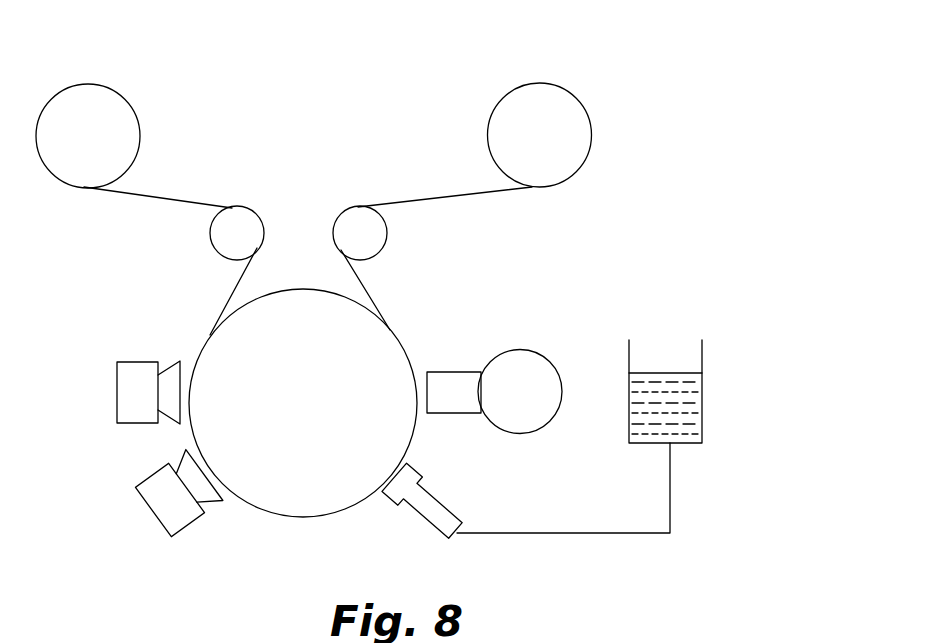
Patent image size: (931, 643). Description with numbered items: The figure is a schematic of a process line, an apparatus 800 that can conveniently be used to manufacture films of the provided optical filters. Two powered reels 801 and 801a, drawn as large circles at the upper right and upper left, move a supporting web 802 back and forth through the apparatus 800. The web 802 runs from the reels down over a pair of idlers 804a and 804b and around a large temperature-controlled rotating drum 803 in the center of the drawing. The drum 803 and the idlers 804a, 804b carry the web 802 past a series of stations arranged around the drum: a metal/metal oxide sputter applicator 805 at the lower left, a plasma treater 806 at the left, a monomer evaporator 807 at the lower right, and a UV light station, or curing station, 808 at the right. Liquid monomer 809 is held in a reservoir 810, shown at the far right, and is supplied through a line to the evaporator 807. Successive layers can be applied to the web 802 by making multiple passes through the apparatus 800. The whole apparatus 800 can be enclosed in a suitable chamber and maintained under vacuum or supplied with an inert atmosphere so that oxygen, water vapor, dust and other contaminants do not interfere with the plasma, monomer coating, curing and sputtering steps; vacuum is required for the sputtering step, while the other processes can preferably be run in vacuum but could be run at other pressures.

The apparatus 800 is at (608, 65).
The powered reel 801 is at (542, 98).
The powered reel 801a is at (103, 97).
The supporting web 802 is at (180, 197).
The temperature-controlled rotating drum 803 is at (302, 505).
The idler 804a is at (227, 242).
The idler 804b is at (373, 245).
The metal/metal oxide sputter applicator 805 is at (165, 513).
The plasma treater 806 is at (128, 387).
The monomer evaporator 807 is at (437, 517).
The UV light station (curing station) 808 is at (522, 422).
The liquid monomer 809 is at (675, 425).
The reservoir 810 is at (702, 353).